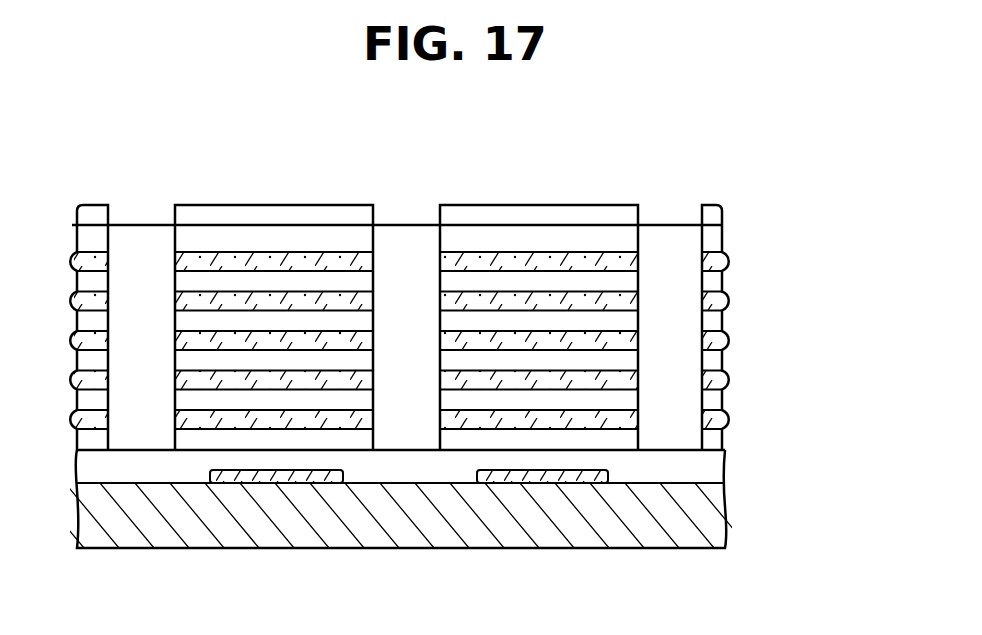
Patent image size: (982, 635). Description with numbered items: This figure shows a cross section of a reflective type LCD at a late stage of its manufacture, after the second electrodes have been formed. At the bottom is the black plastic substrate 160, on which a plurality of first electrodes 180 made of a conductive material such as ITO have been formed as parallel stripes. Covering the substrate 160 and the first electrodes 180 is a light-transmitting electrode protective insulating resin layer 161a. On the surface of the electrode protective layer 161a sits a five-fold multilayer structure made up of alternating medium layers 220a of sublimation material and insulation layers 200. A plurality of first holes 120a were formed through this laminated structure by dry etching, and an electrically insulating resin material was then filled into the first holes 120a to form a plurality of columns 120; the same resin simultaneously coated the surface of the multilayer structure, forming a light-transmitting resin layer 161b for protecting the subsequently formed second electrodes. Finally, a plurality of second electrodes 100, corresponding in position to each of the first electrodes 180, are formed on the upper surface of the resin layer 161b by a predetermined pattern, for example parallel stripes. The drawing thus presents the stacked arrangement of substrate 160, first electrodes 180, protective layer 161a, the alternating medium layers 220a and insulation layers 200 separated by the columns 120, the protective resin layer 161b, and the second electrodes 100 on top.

The second electrode 100 is at (253, 214).
The column 120 is at (168, 356).
The first hole 120a is at (149, 245).
The black plastic substrate 160 is at (705, 520).
The electrode protective insulating resin layer 161a is at (692, 462).
The light-transmitting resin layer 161b is at (618, 235).
The first electrode 180 is at (303, 477).
The insulation layer 200 is at (618, 262).
The medium layer 220a is at (725, 440).